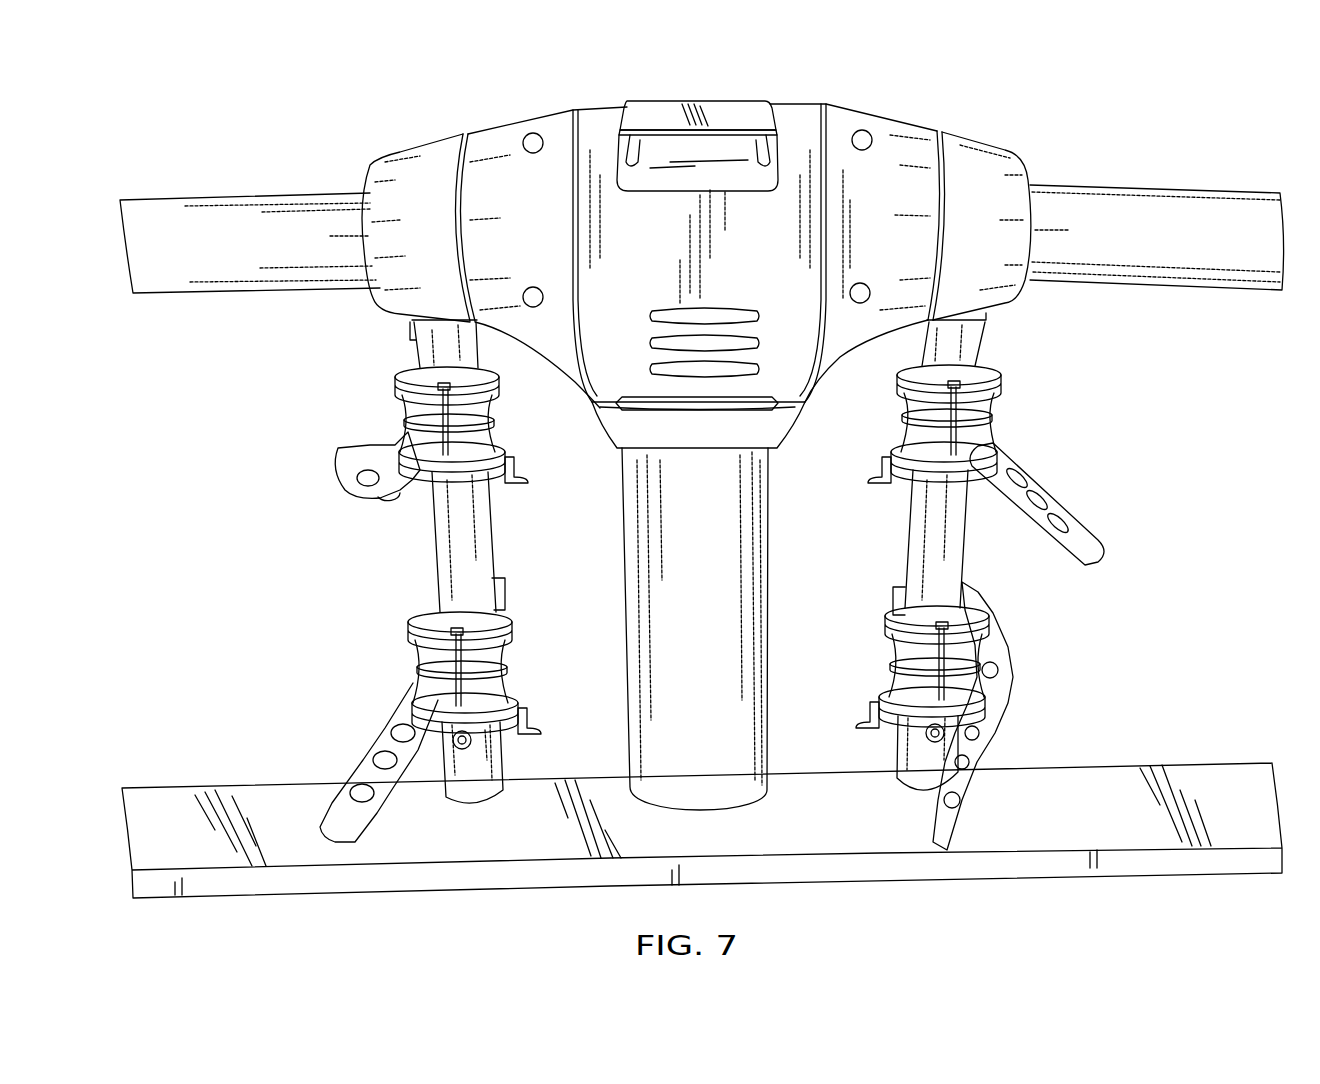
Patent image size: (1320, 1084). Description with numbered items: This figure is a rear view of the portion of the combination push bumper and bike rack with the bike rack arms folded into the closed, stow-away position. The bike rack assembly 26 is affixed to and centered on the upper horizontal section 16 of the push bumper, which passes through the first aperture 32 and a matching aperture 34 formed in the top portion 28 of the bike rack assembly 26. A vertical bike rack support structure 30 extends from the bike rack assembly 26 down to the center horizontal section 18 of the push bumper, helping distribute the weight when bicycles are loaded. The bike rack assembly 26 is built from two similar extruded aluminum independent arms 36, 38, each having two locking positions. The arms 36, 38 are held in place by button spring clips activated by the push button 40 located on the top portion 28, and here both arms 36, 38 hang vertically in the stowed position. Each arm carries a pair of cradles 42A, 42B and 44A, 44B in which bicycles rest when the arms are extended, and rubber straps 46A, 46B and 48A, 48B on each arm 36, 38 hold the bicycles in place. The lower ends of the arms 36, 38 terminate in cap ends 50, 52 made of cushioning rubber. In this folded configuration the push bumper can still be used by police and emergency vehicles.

The upper horizontal section 16 is at (1239, 198).
The center horizontal section 18 is at (1235, 835).
The bike rack assembly 26 is at (675, 245).
The top portion 28 is at (672, 283).
The vertical bike rack support structure 30 is at (652, 606).
The first aperture 32 is at (961, 148).
The left end cap 34 is at (365, 185).
The arm 36 is at (979, 623).
The arm 38 is at (414, 633).
The push button 40 is at (733, 101).
The cradle 42A is at (1000, 418).
The cradle 42B is at (888, 668).
The cradle 44A is at (405, 410).
The cradle 44B is at (500, 667).
The rubber strap 46A is at (1084, 526).
The rubber strap 46B is at (968, 792).
The rubber strap 48A is at (333, 468).
The rubber strap 48B is at (322, 842).
The cap end 50 is at (910, 778).
The cap end 52 is at (471, 793).